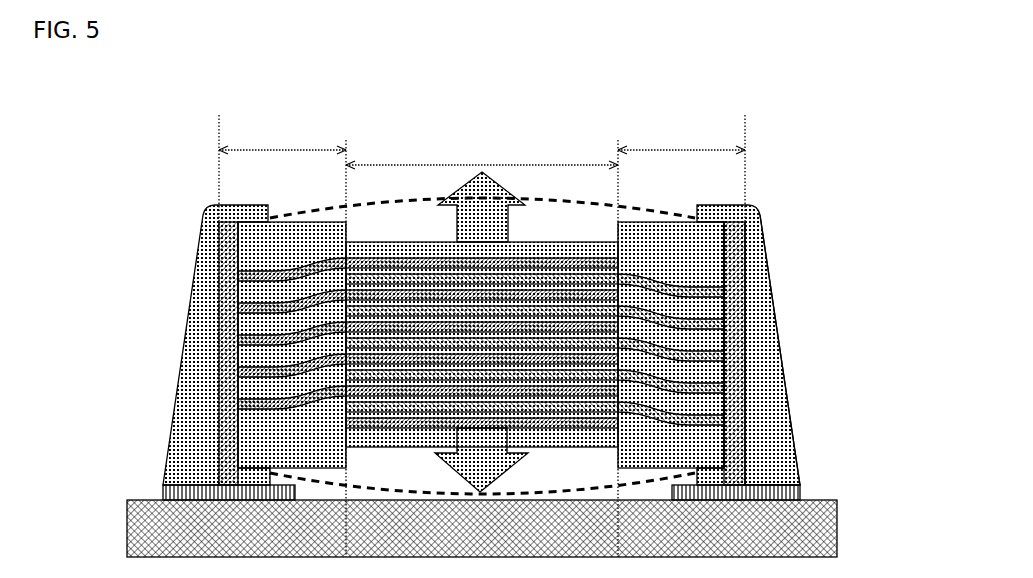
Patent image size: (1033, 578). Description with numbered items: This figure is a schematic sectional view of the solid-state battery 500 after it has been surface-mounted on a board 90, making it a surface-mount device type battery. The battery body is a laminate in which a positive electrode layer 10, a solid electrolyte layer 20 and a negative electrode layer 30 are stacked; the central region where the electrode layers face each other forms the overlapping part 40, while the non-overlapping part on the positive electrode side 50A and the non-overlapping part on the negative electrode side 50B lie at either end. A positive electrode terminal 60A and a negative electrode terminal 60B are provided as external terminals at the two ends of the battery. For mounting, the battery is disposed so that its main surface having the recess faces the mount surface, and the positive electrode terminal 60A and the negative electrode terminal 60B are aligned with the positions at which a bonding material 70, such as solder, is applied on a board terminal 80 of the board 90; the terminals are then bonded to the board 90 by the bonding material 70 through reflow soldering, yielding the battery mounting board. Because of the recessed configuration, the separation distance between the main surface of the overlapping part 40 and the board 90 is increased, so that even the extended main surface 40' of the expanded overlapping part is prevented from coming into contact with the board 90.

The solid-state battery 500 is at (653, 118).
The positive electrode layer 10 is at (720, 288).
The solid electrolyte layer 20 is at (703, 308).
The negative electrode layer 30 is at (605, 338).
The overlapping part 40 is at (490, 330).
The main surface of expanded overlapping part 40' is at (482, 339).
The non-overlapping part on positive electrode side 50A is at (282, 307).
The non-overlapping part on negative electrode side 50B is at (681, 307).
The positive electrode terminal 60A is at (737, 215).
The negative electrode terminal 60B is at (219, 308).
The bonding material 70 is at (777, 453).
The board terminal 80 is at (793, 492).
The board 90 is at (825, 523).